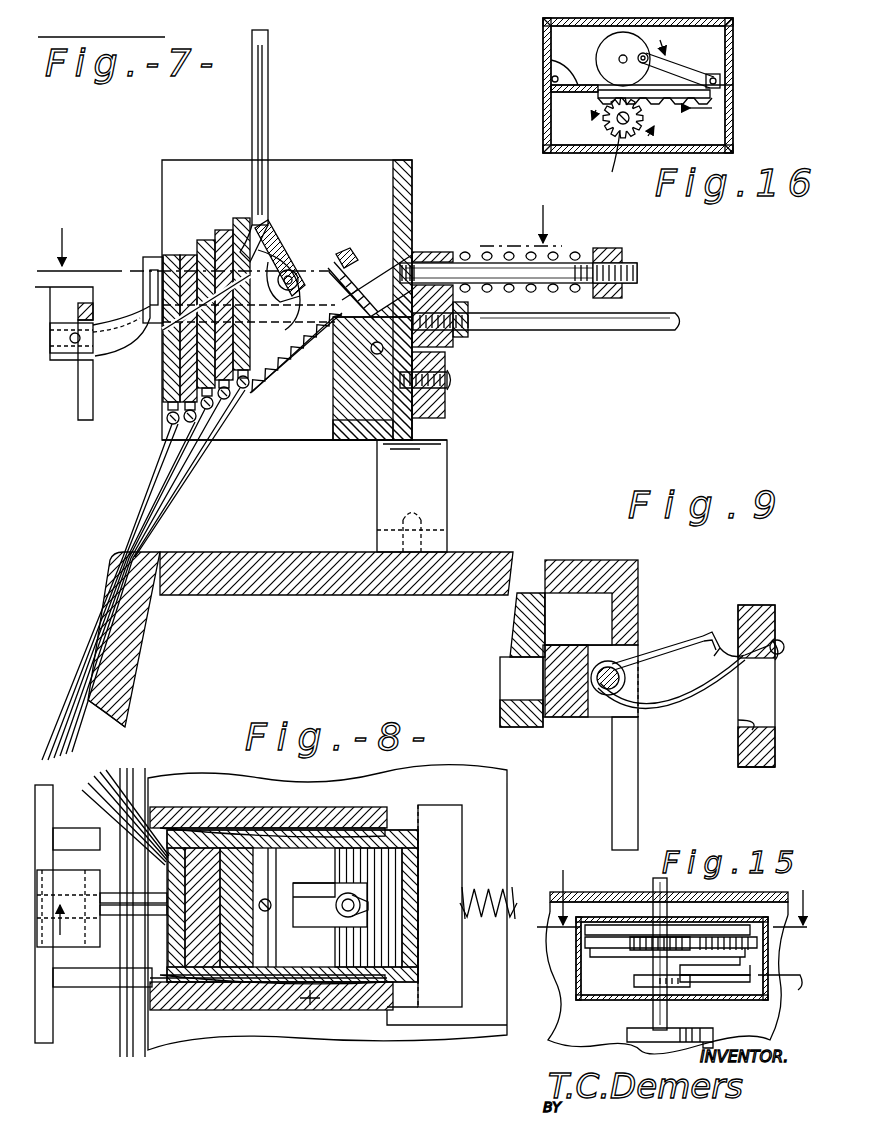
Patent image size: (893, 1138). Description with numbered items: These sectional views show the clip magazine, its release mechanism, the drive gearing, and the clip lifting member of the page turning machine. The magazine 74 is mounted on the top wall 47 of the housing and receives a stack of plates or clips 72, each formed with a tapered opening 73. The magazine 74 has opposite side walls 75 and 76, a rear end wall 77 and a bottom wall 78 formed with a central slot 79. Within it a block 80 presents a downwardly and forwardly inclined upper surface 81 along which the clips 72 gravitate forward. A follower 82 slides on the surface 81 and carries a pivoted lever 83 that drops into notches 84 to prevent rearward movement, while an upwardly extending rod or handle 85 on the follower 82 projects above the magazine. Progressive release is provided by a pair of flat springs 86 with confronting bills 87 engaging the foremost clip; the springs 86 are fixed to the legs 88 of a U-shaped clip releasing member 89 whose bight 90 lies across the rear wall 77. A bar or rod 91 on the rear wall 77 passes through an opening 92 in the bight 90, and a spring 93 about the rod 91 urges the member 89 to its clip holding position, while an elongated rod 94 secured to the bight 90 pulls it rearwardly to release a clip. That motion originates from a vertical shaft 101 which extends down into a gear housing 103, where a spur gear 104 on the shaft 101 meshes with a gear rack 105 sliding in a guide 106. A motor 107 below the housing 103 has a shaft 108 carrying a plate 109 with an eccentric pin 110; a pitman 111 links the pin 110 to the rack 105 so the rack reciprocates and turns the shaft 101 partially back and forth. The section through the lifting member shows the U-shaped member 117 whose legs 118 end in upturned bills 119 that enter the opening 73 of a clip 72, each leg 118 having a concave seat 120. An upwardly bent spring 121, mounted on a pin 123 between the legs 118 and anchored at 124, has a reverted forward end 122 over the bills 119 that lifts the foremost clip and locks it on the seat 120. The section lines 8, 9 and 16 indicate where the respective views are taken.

In FIG. 7, the section line 8— 8 is at (299, 225).
In FIG. 8, the section line 9— 9 is at (112, 955).
In FIG. 15, the section line 16— 16 is at (676, 885).
In FIG. 7, the top wall 47 is at (493, 552).
In FIG. 7, the plate 72 is at (172, 256).
In FIG. 9, the plate 72 is at (760, 758).
In FIG. 7, the tapered opening 73 is at (168, 360).
In FIG. 9, the tapered opening 73 is at (742, 722).
In FIG. 7, the magazine 74 is at (360, 158).
In FIG. 8, the side wall 75 is at (330, 838).
In FIG. 8, the side wall 76 is at (350, 975).
In FIG. 7, the rear end wall 77 is at (413, 180).
In FIG. 8, the rear end wall 77 is at (420, 850).
In FIG. 7, the bottom wall 78 is at (345, 444).
In FIG. 7, the slot 79 is at (286, 444).
In FIG. 7, the block 80 is at (340, 392).
In FIG. 7, the inclined upper surface 81 is at (300, 270).
In FIG. 7, the follower 82 is at (280, 240).
In FIG. 7, the lever 83 is at (338, 272).
In FIG. 8, the lever 83 is at (312, 920).
In FIG. 7, the notches 84 is at (382, 300).
In FIG. 8, the notches 84 is at (388, 945).
In FIG. 7, the rod or handle 85 is at (266, 118).
In FIG. 8, the rod or handle 85 is at (270, 890).
In FIG. 8, the flat springs 86 is at (250, 828).
In FIG. 8, the bills 87 is at (168, 830).
In FIG. 8, the legs 88 is at (320, 1012).
In FIG. 8, the clip releasing member 89 is at (320, 1012).
In FIG. 7, the bight 90 is at (422, 252).
In FIG. 8, the bight 90 is at (456, 962).
In FIG. 7, the bar or rod 91 is at (548, 266).
In FIG. 7, the opening 92 is at (455, 258).
In FIG. 7, the spring 93 is at (598, 252).
In FIG. 7, the elongated rod 94 is at (568, 326).
In FIG. 16, the shaft 101 is at (627, 159).
In FIG. 15, the shaft 101 is at (652, 882).
In FIG. 16, the gear housing 103 is at (545, 108).
In FIG. 15, the gear housing 103 is at (590, 1012).
In FIG. 16, the spur gear 104 is at (605, 126).
In FIG. 15, the spur gear 104 is at (668, 935).
In FIG. 16, the gear rack 105 is at (740, 90).
In FIG. 15, the gear rack 105 is at (718, 938).
In FIG. 16, the guide 106 is at (556, 60).
In FIG. 15, the motor 107 is at (689, 1029).
In FIG. 15, the motor shaft 108 is at (652, 1016).
In FIG. 16, the plate 109 is at (612, 43).
In FIG. 15, the plate 109 is at (640, 980).
In FIG. 15, the eccentric pin 110 is at (680, 975).
In FIG. 16, the pitman 111 is at (680, 65).
In FIG. 15, the pitman 111 is at (750, 993).
In FIG. 7, the U-shaped member 117 is at (88, 352).
In FIG. 9, the U-shaped member 117 is at (648, 640).
In FIG. 8, the U-shaped member 117 is at (118, 925).
In FIG. 9, the legs 118 is at (668, 720).
In FIG. 9, the upturned bill 119 is at (776, 686).
In FIG. 9, the concave seat 120 is at (784, 650).
In FIG. 9, the spring 121 is at (688, 700).
In FIG. 9, the reverted forward end 122 is at (778, 640).
In FIG. 9, the pin 123 is at (603, 683).
In FIG. 9, the anchor 124 is at (705, 636).
In FIG. 8, the anchor 124 is at (118, 880).